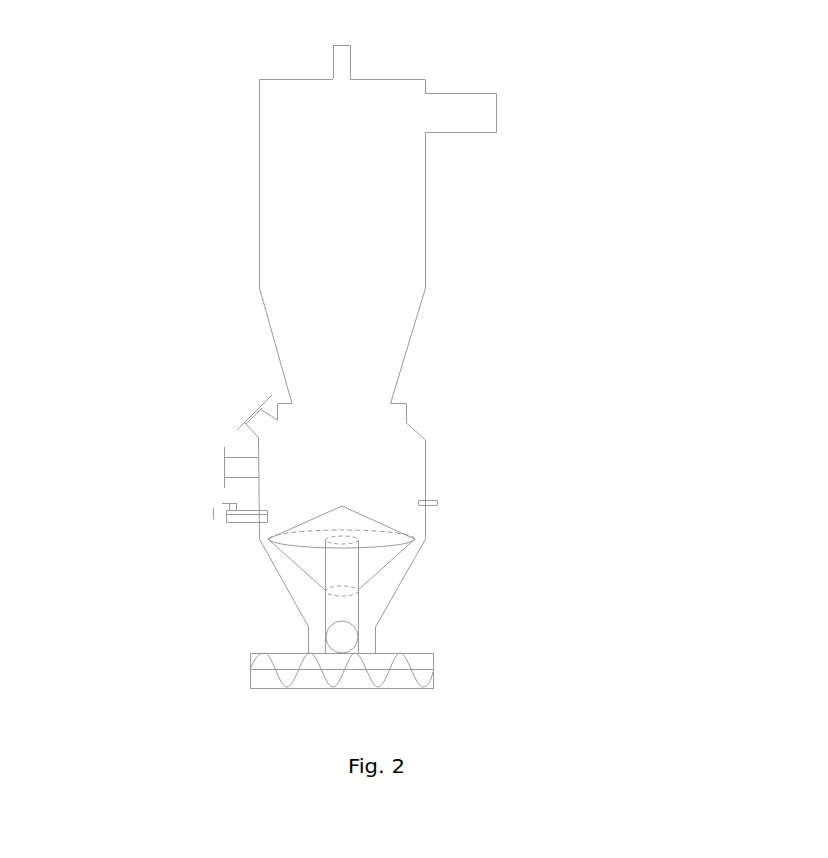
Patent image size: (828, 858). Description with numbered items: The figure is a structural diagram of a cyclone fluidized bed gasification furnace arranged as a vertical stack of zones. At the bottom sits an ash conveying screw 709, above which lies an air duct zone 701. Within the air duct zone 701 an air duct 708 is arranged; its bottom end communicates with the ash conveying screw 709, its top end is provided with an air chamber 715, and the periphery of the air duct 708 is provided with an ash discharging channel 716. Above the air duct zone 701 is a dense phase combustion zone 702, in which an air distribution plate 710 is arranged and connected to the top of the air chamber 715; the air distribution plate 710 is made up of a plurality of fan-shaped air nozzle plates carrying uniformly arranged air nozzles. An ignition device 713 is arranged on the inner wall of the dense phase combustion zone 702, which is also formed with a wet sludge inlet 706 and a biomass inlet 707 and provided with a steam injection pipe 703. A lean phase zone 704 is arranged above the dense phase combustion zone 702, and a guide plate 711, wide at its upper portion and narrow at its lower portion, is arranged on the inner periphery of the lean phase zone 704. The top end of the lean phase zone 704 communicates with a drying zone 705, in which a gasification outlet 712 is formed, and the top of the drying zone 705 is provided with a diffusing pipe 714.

The air duct zone 701 is at (297, 592).
The dense phase combustion zone 702 is at (343, 493).
The steam injection pipe 703 is at (432, 502).
The lean phase zone 704 is at (345, 375).
The drying zone 705 is at (343, 62).
The wet sludge inlet 706 is at (249, 411).
The biomass inlet 707 is at (222, 466).
The air duct 708 is at (342, 637).
The ash conveying screw 709 is at (250, 660).
The air distribution plate 710 is at (350, 523).
The guide plate 711 is at (276, 343).
The gasification outlet 712 is at (497, 113).
The ignition device 713 is at (222, 514).
The diffusing pipe 714 is at (345, 183).
The air chamber 715 is at (366, 565).
The ash discharging channel 716 is at (366, 601).